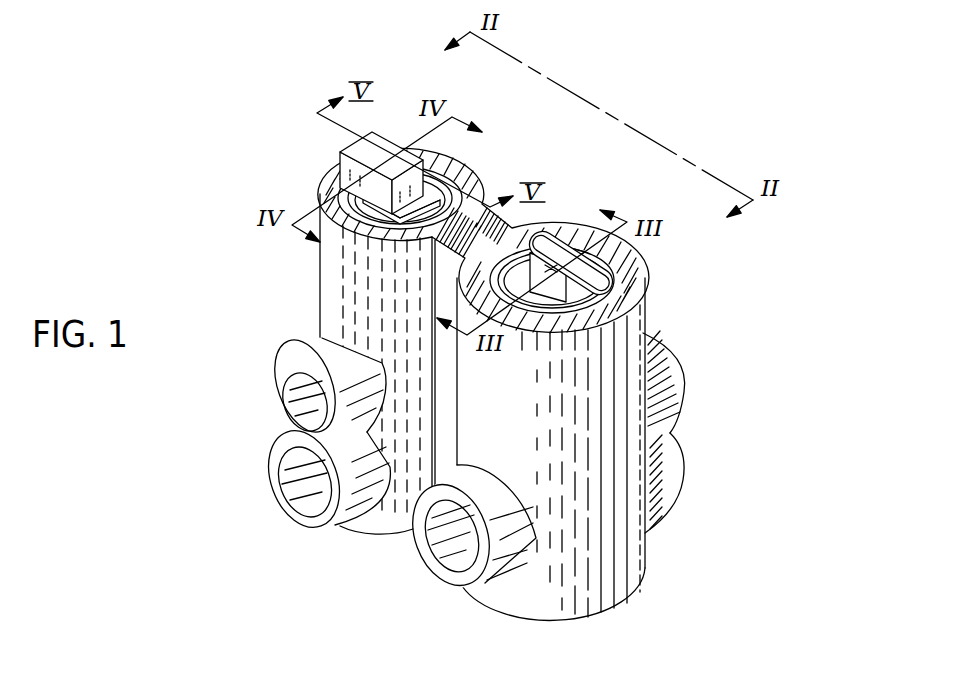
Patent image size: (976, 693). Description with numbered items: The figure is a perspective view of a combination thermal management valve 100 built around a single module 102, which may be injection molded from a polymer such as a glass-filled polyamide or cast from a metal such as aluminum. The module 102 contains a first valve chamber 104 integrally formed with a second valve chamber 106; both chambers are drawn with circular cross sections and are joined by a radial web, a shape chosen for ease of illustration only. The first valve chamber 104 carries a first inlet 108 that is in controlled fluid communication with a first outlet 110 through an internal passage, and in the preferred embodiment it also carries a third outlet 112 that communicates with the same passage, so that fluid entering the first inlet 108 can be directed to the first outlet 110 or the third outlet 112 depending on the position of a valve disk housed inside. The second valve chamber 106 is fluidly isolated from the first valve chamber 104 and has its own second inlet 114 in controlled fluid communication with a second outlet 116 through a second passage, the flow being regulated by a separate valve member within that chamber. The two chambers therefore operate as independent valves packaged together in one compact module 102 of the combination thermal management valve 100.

The combination thermal management valve 100 is at (678, 68).
The module 102 is at (383, 542).
The first valve chamber 104 is at (622, 607).
The second valve chamber 106 is at (320, 290).
The first inlet 108 is at (453, 537).
The first outlet 110 is at (684, 380).
The third outlet 112 is at (683, 480).
The second inlet 114 is at (288, 414).
The second outlet 116 is at (283, 490).